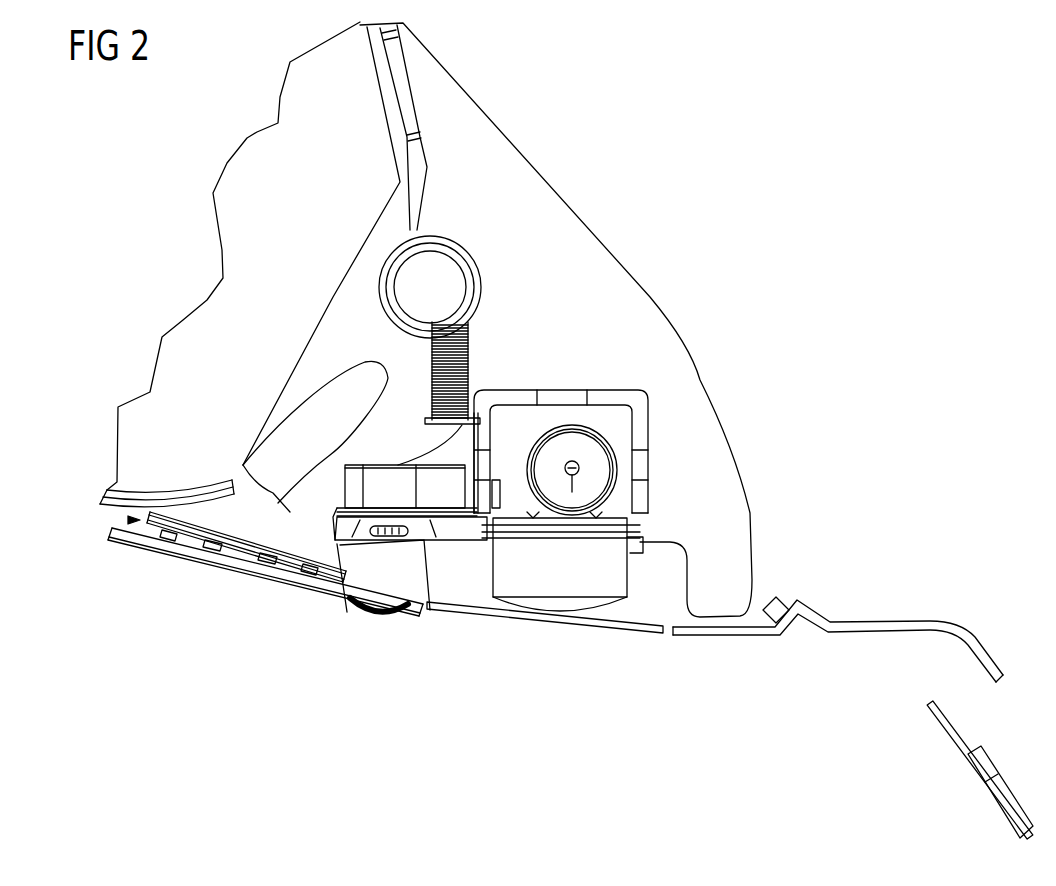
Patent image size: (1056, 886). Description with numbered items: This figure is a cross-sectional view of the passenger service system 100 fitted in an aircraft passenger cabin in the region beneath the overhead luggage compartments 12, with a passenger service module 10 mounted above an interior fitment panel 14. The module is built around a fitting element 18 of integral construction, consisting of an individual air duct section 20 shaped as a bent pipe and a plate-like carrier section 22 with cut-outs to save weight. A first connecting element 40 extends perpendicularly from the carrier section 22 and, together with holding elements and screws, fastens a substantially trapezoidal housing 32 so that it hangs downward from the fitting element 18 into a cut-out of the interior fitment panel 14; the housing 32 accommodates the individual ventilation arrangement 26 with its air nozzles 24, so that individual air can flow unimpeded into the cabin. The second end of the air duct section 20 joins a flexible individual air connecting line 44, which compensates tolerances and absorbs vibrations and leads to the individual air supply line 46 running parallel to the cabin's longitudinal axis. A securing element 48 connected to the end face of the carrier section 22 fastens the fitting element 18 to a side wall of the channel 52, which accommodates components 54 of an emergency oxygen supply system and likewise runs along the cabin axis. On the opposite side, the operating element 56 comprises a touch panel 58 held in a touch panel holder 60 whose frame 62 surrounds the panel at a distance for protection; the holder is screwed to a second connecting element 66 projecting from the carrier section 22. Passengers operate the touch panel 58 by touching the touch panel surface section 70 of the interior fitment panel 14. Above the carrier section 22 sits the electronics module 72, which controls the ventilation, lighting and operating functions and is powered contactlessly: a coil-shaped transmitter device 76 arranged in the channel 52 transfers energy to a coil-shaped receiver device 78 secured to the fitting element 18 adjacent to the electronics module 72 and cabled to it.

The passenger service module 10 is at (520, 345).
The overhead luggage compartment 12 is at (220, 283).
The interior fitment panel 14 is at (425, 612).
The fitting element 18 is at (468, 543).
The individual air duct section 20 is at (437, 445).
The carrier section 22 is at (432, 520).
The air nozzle 24 is at (350, 612).
The individual ventilation arrangement 26 is at (318, 625).
The housing 32 is at (407, 620).
The first connecting element 40 is at (397, 540).
The individual air connecting line 44 is at (432, 370).
The individual air supply line 46 is at (450, 255).
The securing element 48 is at (482, 425).
The channel 52 is at (598, 402).
The component of an emergency oxygen supply system 54 is at (606, 463).
The operating element 56 is at (128, 520).
The touch panel 58 is at (235, 556).
The touch panel holder 60 is at (325, 524).
The frame 62 is at (250, 518).
The second connecting element 66 is at (325, 586).
The touch panel surface section 70 is at (163, 548).
The electronics module 72 is at (338, 472).
The transmitter device 76 is at (498, 485).
The receiver device 78 is at (494, 545).
The passenger service system 100 is at (615, 298).